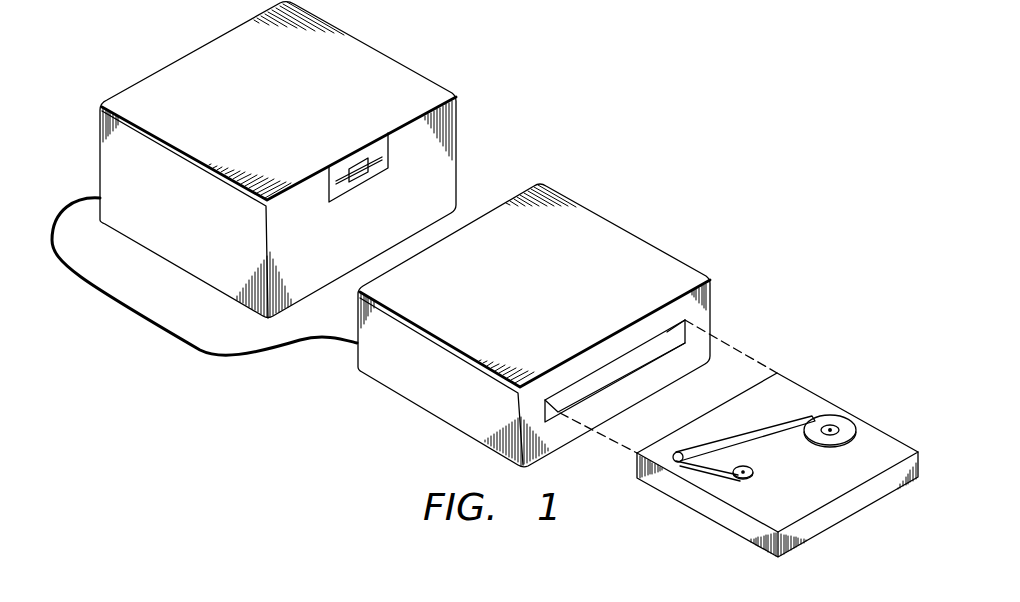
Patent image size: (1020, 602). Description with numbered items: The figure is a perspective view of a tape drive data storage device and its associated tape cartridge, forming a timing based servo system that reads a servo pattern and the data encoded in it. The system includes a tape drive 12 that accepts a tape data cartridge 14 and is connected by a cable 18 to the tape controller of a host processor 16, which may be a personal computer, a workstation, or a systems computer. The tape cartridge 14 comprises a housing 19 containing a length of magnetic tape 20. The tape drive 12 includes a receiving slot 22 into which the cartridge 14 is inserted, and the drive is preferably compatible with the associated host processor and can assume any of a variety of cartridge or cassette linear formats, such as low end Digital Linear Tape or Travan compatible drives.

The tape drive 12 is at (612, 195).
The tape data cartridge 14 is at (836, 382).
The host processor 16 is at (178, 72).
The cable 18 is at (233, 358).
The housing 19 is at (845, 512).
The magnetic tape 20 is at (758, 437).
The receiving slot 22 is at (640, 361).